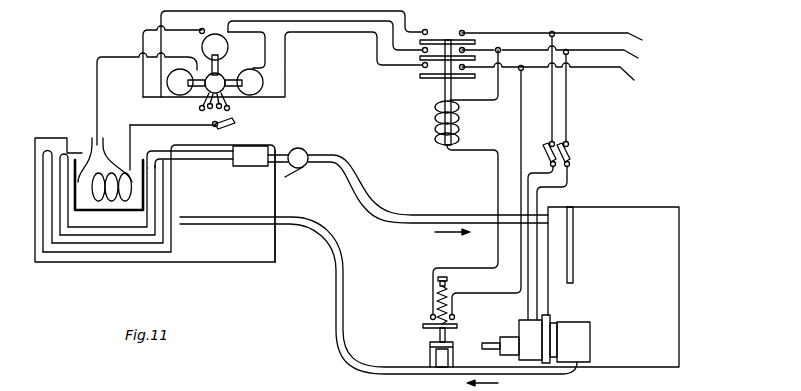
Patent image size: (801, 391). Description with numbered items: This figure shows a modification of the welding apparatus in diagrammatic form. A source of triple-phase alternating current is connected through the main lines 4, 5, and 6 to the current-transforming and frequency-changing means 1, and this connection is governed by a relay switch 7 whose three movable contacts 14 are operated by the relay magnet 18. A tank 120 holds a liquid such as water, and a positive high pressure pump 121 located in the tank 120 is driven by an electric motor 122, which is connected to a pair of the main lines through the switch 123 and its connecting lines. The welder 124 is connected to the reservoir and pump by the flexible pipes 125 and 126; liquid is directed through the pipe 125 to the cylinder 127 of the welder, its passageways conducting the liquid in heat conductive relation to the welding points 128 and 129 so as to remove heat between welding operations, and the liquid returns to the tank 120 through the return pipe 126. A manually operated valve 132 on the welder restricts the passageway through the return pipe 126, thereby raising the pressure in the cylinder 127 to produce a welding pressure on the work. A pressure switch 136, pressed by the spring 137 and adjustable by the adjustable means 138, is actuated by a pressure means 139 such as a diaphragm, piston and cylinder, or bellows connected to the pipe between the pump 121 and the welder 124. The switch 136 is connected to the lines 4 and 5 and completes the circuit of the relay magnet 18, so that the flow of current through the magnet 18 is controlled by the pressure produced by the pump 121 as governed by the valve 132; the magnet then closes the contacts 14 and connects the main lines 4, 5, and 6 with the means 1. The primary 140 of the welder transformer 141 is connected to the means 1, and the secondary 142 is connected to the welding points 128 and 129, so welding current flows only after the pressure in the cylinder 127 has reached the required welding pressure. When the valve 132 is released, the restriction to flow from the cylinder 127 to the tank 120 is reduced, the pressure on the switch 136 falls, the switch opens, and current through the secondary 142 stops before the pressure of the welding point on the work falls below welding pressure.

The current-transforming and frequency-changing means 1 is at (282, 61).
The main line 4 is at (549, 188).
The main line 5 is at (556, 96).
The main line 6 is at (558, 86).
The relay switch 7 is at (427, 92).
The movable contacts 14 is at (424, 40).
The relay magnet 18 is at (459, 122).
The tank 120 is at (606, 207).
The high pressure pump 121 is at (575, 330).
The electric motor 122 is at (530, 337).
The switch 123 is at (570, 160).
The welder 124 is at (276, 193).
The flexible pipe 125 is at (343, 308).
The return pipe 126 is at (405, 213).
The cylinder 127 is at (245, 155).
The welding point 128 is at (77, 152).
The welding point 129 is at (186, 148).
The valve 132 is at (300, 150).
The pressure switch 136 is at (425, 326).
The spring 137 is at (437, 305).
The adjustable means 138 is at (437, 277).
The pressure means 139 is at (430, 350).
The primary 140 is at (115, 173).
The transformer 141 is at (137, 117).
The secondary 142 is at (107, 212).